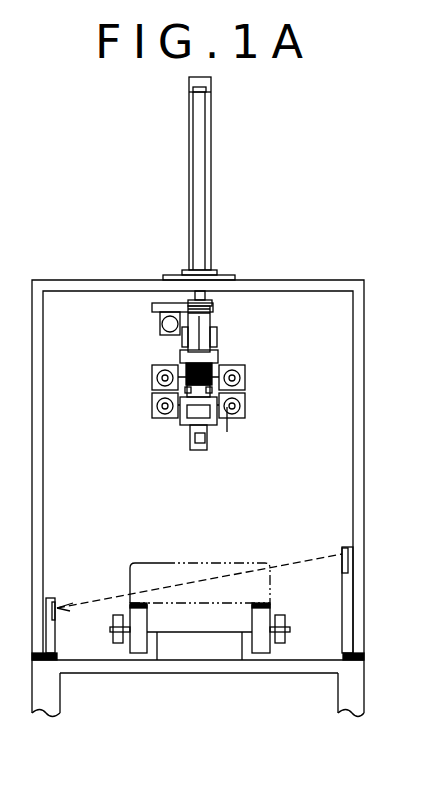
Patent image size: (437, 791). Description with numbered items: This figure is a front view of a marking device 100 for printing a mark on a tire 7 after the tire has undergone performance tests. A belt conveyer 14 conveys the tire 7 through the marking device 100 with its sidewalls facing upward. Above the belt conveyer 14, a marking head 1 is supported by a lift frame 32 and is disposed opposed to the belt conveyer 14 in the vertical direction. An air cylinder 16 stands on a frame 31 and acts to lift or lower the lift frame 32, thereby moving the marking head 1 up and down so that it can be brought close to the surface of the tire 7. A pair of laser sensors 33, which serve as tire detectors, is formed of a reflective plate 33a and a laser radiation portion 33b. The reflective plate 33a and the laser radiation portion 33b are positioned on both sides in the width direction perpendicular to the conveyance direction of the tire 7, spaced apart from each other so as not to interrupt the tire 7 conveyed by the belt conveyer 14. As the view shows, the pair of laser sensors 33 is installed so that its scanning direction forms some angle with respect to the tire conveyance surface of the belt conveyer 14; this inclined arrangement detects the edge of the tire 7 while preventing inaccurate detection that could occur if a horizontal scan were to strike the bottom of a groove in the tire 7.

The marking device 100 is at (306, 217).
The frame 31 is at (364, 467).
The air cylinder 16 is at (189, 170).
The lift frame 32 is at (150, 305).
The marking head 1 is at (264, 380).
The tire 7 is at (168, 563).
The belt conveyer 14 is at (259, 604).
The reflective plate 33a is at (57, 632).
The laser radiation portion 33b is at (342, 632).
The laser sensors 33 is at (287, 717).